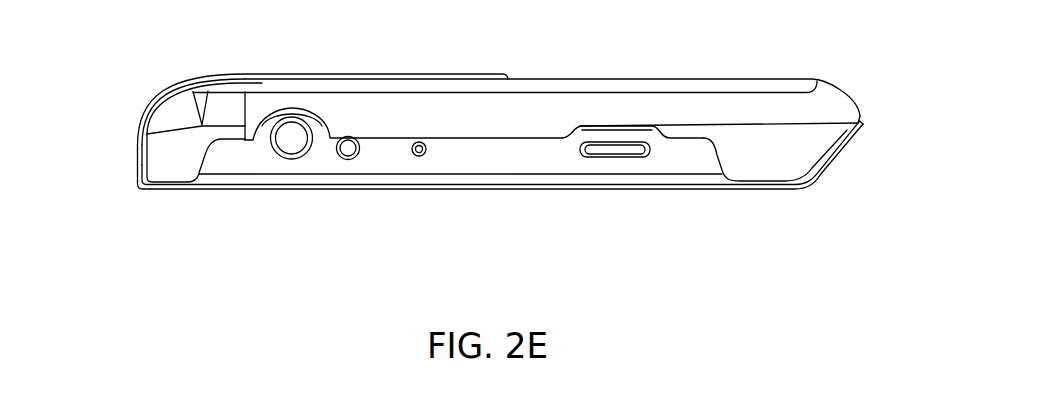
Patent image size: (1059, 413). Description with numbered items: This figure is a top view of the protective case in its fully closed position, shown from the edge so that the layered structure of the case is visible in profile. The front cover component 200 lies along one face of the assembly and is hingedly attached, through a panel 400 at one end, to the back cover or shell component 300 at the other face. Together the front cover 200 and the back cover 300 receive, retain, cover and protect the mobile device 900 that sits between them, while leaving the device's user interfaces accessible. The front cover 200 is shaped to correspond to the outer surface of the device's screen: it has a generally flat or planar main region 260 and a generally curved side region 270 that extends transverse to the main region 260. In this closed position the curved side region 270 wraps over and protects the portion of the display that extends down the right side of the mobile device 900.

The front cover component 200 is at (403, 190).
The main region 260 is at (306, 189).
The curved side region 270 is at (840, 159).
The back cover or shell component 300 is at (850, 90).
The panel 400 is at (137, 157).
The mobile device 900 is at (477, 162).